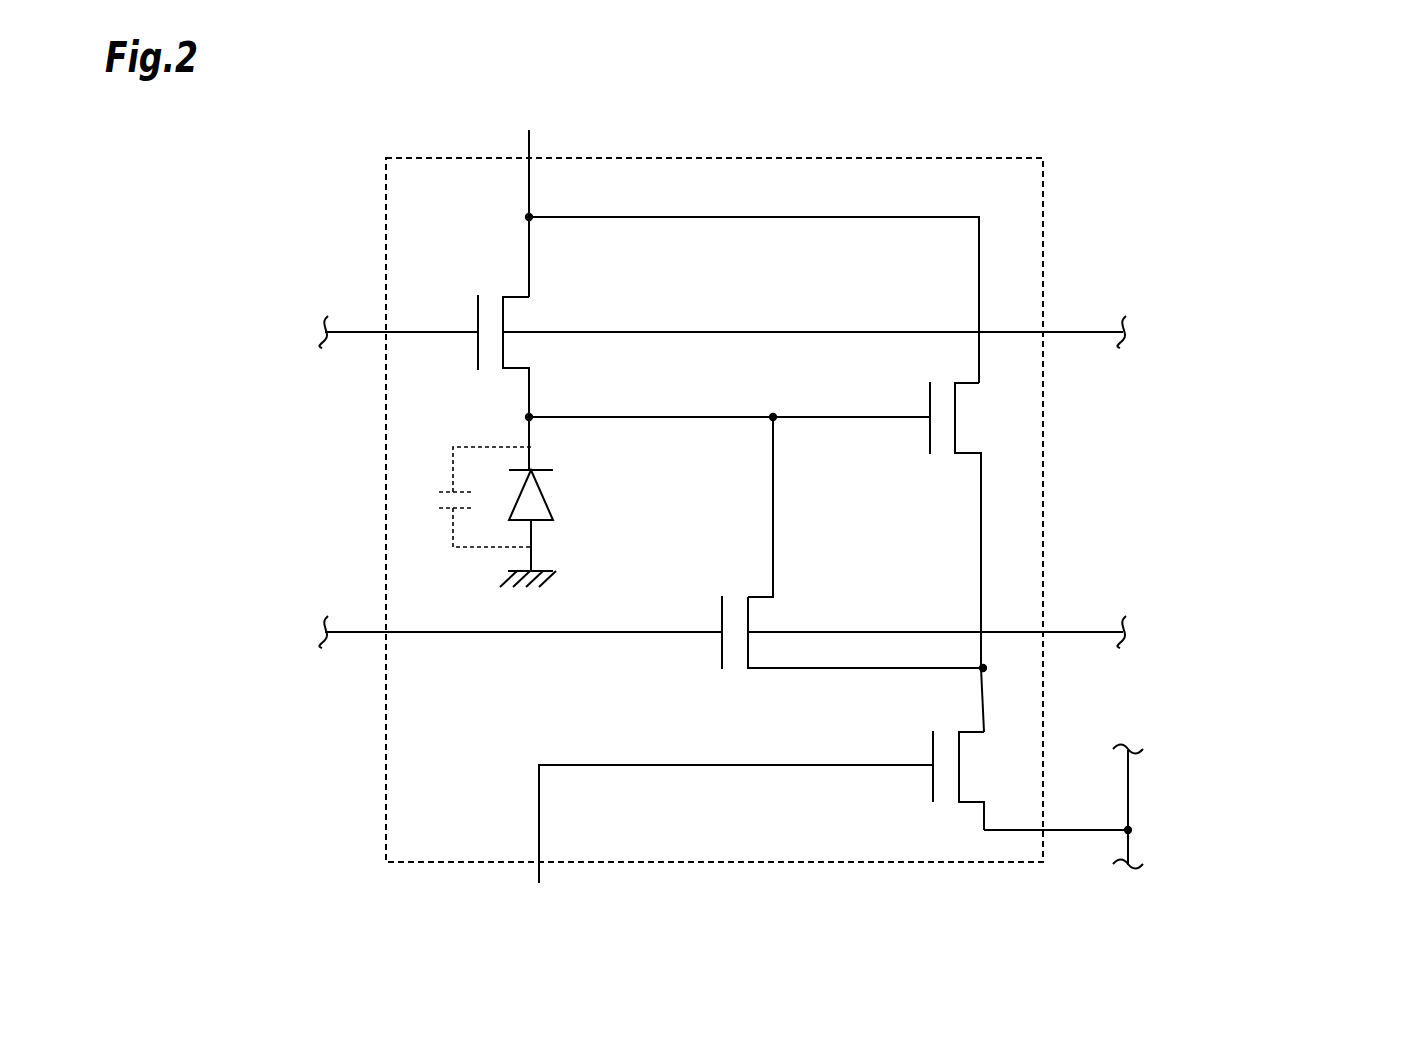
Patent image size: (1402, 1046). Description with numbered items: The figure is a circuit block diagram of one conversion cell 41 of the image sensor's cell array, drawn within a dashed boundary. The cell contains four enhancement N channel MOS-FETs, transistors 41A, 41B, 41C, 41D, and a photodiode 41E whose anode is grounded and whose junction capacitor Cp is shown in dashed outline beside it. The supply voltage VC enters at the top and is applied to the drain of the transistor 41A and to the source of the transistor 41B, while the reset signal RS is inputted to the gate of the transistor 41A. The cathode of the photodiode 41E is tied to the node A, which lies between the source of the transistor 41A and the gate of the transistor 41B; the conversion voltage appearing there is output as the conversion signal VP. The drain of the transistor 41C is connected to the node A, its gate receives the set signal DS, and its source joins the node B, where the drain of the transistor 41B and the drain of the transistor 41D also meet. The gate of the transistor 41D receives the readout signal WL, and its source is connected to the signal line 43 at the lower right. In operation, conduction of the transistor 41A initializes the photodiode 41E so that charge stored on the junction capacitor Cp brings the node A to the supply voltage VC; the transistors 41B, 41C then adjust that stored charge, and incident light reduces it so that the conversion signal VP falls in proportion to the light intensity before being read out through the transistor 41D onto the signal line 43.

The conversion cell 41 is at (1043, 268).
The transistor 41A is at (488, 307).
The transistor 41B is at (946, 448).
The transistor 41C is at (738, 660).
The transistor 41D is at (949, 796).
The photodiode 41E is at (551, 500).
The signal line 43 is at (1128, 784).
The supply voltage VC is at (514, 132).
The conversion signal VP is at (543, 417).
The reset signal RS is at (348, 334).
The set signal DS is at (348, 634).
The readout signal WL is at (524, 882).
The node A is at (773, 418).
The node B is at (984, 669).
The junction capacitor Cp is at (447, 512).